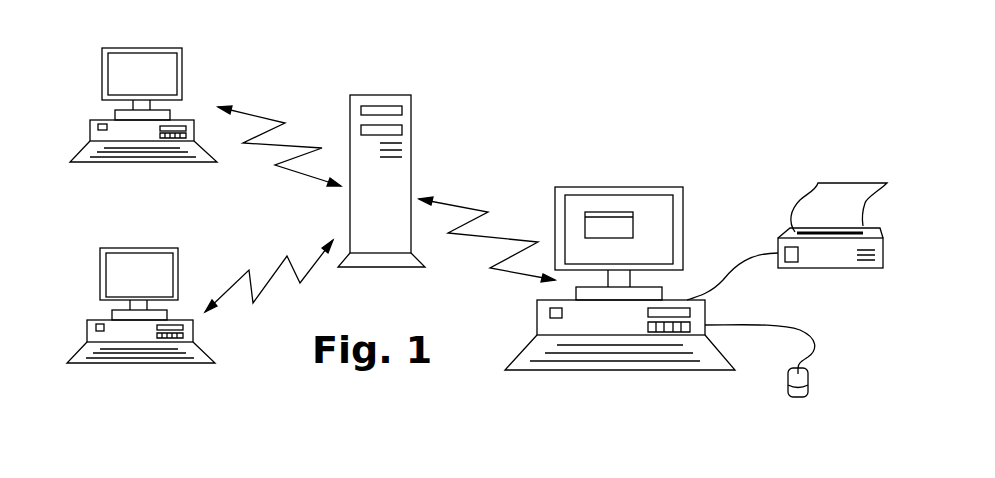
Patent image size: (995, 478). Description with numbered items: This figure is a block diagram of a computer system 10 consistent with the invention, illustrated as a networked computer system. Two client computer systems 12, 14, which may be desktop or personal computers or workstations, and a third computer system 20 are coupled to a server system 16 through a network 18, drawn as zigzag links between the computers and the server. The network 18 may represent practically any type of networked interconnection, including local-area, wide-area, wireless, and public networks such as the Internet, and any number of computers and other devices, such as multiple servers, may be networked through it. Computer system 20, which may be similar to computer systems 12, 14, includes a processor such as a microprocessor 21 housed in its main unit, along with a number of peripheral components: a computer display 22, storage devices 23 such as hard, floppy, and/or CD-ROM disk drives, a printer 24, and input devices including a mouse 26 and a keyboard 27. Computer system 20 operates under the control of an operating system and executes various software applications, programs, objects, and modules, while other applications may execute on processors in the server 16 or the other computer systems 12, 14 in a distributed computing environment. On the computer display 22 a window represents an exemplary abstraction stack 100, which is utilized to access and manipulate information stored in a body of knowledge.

The computer system 10 is at (543, 102).
The client computer system 12 is at (102, 65).
The client computer system 14 is at (100, 252).
The server system 16 is at (366, 95).
The network 18 is at (285, 256).
The computer system 20 is at (606, 273).
The microprocessor 21 is at (590, 325).
The computer display 22 is at (590, 188).
The storage devices 23 is at (665, 332).
The printer 24 is at (790, 233).
The mouse 26 is at (808, 388).
The keyboard 27 is at (523, 367).
The abstraction stack 100 is at (583, 223).